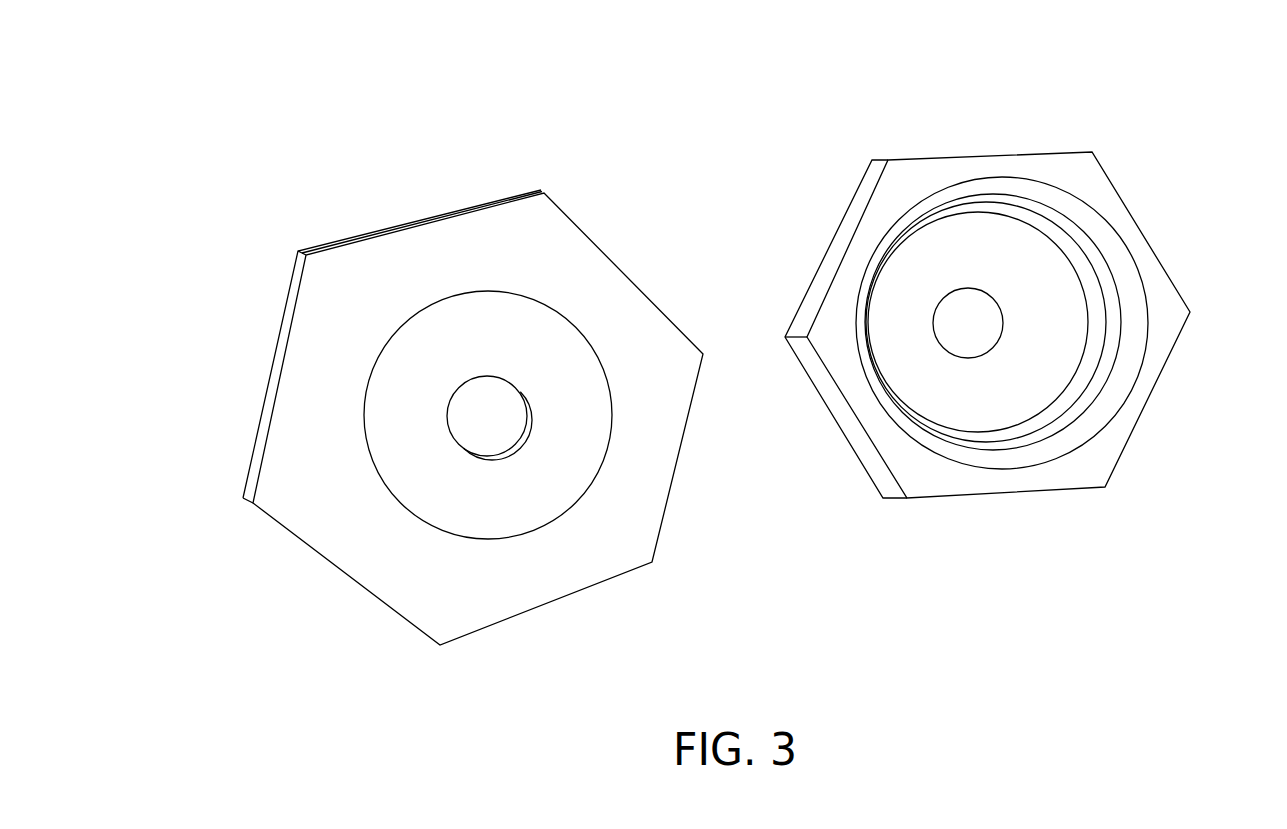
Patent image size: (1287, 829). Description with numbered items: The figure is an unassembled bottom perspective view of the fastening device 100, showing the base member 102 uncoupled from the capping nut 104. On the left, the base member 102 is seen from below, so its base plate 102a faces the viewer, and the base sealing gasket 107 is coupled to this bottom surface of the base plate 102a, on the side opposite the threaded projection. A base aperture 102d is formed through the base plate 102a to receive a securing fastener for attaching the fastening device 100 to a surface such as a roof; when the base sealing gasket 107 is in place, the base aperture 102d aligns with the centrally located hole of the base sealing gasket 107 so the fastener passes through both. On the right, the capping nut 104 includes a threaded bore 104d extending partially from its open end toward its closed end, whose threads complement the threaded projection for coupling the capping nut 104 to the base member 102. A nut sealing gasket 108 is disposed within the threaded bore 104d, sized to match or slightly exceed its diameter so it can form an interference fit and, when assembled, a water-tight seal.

The fastening device 100 is at (618, 95).
The base member 102 is at (240, 415).
The base plate 102a is at (318, 528).
The base aperture 102d is at (495, 397).
The base sealing gasket 107 is at (420, 347).
The capping nut 104 is at (965, 518).
The threaded bore 104d is at (1110, 355).
The nut sealing gasket 108 is at (1077, 296).